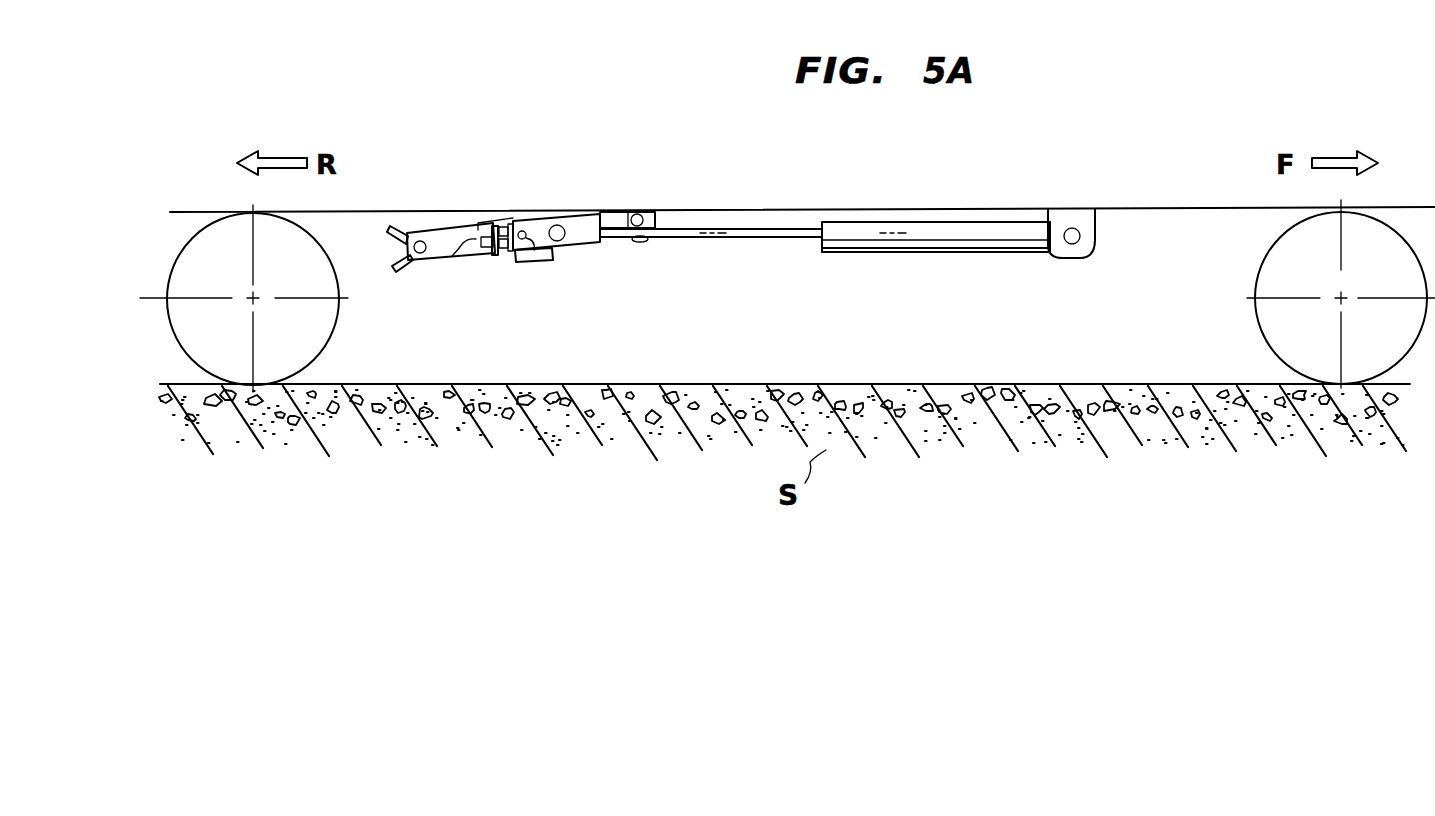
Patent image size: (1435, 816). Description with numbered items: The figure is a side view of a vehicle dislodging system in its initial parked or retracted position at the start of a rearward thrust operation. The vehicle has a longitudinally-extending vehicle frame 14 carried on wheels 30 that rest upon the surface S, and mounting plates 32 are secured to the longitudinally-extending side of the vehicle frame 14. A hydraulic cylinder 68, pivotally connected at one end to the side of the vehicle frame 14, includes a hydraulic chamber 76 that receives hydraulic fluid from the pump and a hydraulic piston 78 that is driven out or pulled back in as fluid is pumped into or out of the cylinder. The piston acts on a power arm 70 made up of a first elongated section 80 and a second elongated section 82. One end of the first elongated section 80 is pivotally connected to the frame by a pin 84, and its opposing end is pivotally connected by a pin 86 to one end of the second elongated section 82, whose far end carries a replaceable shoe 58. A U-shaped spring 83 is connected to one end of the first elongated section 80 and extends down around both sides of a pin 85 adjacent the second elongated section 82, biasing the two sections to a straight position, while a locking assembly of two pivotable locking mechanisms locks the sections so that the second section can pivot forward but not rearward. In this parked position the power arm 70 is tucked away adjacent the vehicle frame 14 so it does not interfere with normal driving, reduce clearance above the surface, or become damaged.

The vehicle frame 14 is at (384, 210).
The wheel 30 is at (338, 322).
The mounting plate 32 is at (672, 210).
The replaceable shoe 58 is at (397, 238).
The hydraulic cylinder 68 is at (825, 233).
The power arm 70 is at (462, 236).
The hydraulic chamber 76 is at (888, 254).
The hydraulic piston 78 is at (735, 240).
The first elongated section 80 is at (577, 220).
The second elongated section 82 is at (462, 256).
The spring 83 is at (500, 226).
The pin 84 is at (640, 212).
The pin 85 is at (452, 256).
The pin 86 is at (544, 262).